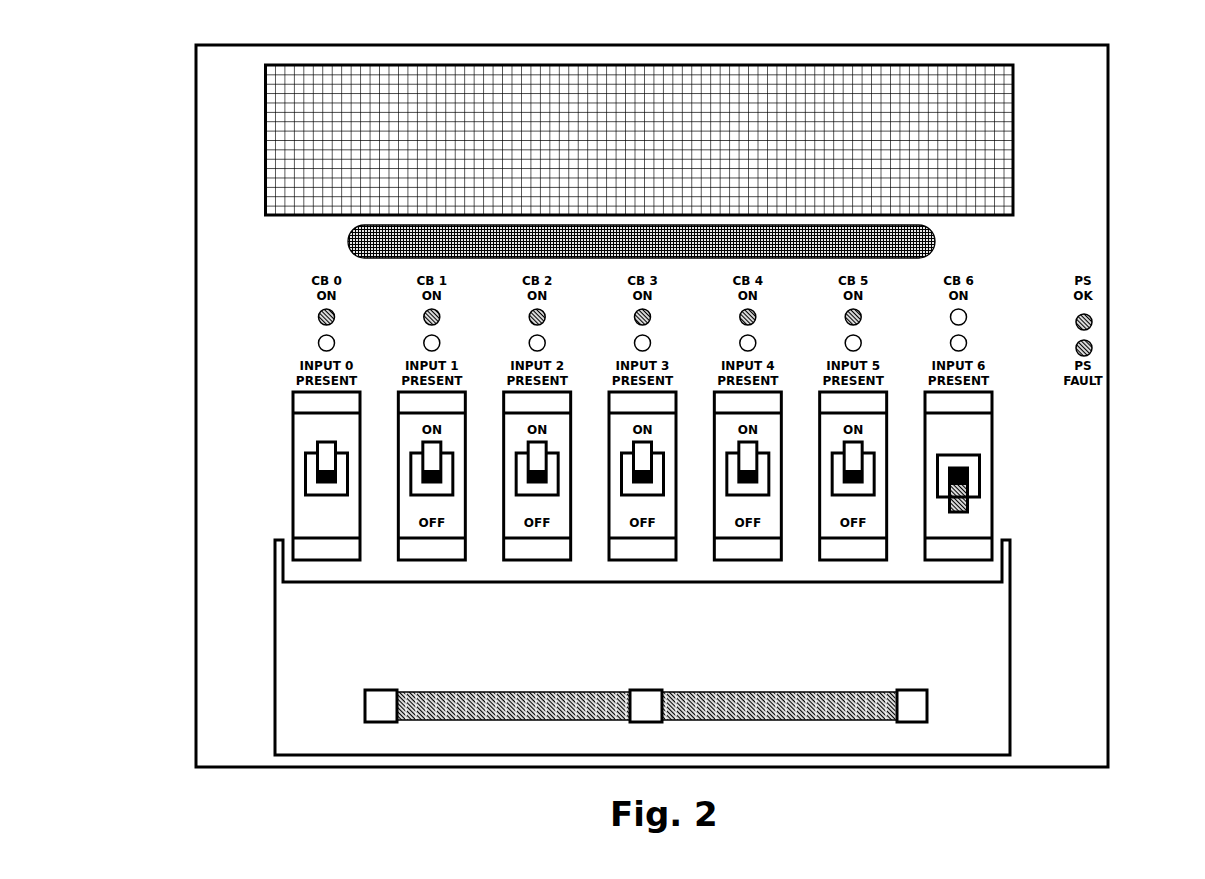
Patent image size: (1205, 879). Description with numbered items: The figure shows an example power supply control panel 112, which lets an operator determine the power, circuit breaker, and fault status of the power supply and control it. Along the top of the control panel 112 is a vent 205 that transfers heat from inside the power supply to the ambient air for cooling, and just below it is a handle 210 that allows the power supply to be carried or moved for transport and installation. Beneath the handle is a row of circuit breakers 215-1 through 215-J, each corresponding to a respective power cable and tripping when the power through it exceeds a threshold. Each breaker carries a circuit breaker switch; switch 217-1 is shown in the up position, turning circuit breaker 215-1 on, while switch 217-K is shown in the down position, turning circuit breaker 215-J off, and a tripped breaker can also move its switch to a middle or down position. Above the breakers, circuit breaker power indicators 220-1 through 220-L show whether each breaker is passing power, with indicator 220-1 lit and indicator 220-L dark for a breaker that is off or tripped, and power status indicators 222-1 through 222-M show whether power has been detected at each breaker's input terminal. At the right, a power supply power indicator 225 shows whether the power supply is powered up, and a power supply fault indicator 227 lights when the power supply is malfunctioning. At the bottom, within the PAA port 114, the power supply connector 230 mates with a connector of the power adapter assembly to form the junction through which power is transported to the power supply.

The power supply control panel 112 is at (162, 67).
The PAA port 114 is at (983, 641).
The vent 205 is at (287, 140).
The handle 210 is at (350, 240).
The circuit breaker 215-1 is at (300, 439).
The circuit breaker 215-J is at (980, 440).
The circuit breaker switch 217-1 is at (313, 450).
The circuit breaker switch 217-K is at (968, 498).
The circuit breaker power indicator 220-1 is at (318, 316).
The circuit breaker power indicator 220-L is at (966, 314).
The power status indicator 222-1 is at (318, 343).
The power status indicator 222-M is at (966, 341).
The power supply power indicator 225 is at (1092, 322).
The power supply fault indicator 227 is at (1092, 348).
The power supply connector 230 is at (478, 690).